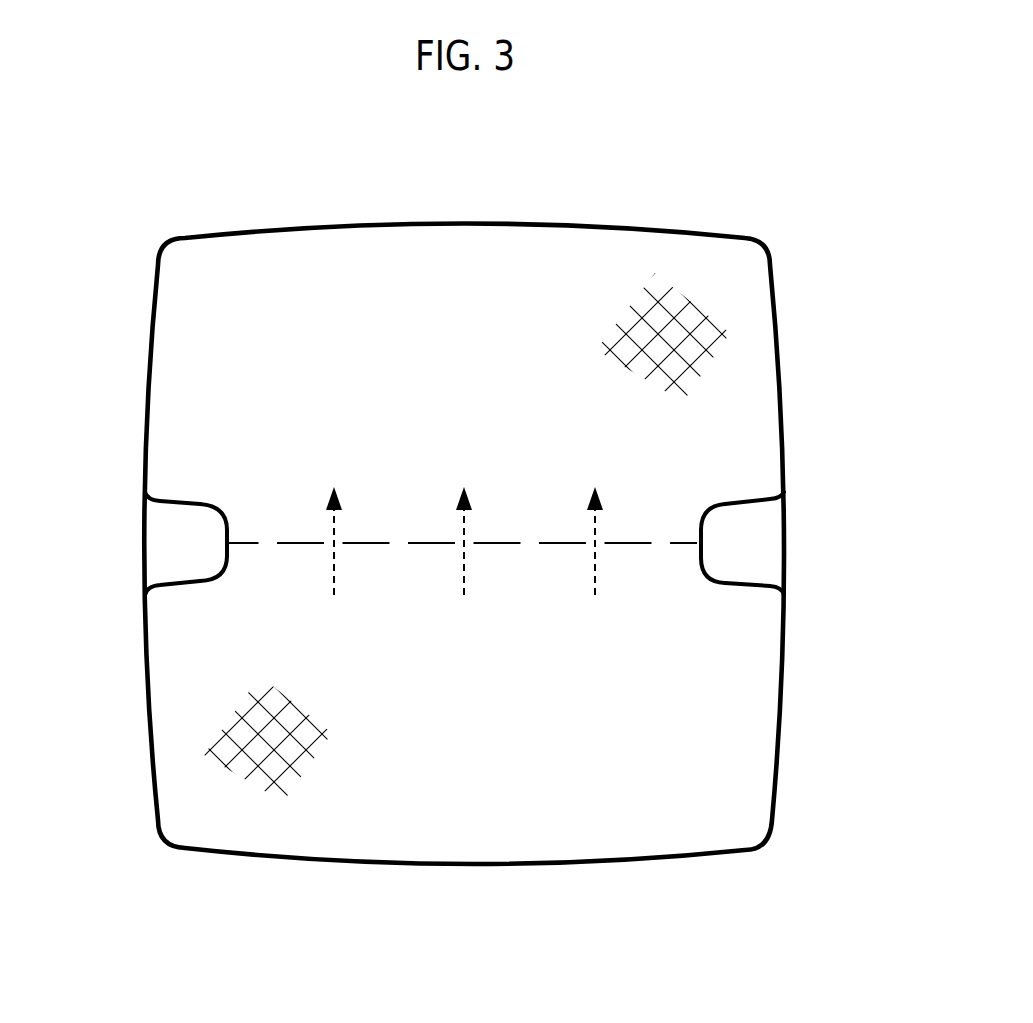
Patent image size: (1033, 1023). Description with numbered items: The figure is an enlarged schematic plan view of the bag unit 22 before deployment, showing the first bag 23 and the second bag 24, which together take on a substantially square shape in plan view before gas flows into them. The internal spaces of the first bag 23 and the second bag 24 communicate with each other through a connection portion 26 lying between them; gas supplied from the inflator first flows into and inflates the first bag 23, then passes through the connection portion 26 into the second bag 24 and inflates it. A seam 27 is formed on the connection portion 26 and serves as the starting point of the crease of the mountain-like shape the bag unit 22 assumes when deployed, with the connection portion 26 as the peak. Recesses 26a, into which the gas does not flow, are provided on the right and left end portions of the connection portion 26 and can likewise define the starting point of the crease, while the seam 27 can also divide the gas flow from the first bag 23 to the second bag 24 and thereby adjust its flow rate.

The bag unit 22 is at (624, 171).
The first bag 23 is at (734, 691).
The second bag 24 is at (735, 391).
The connection portion 26 is at (131, 533).
The recess 26a is at (172, 544).
The seam 27 is at (291, 542).